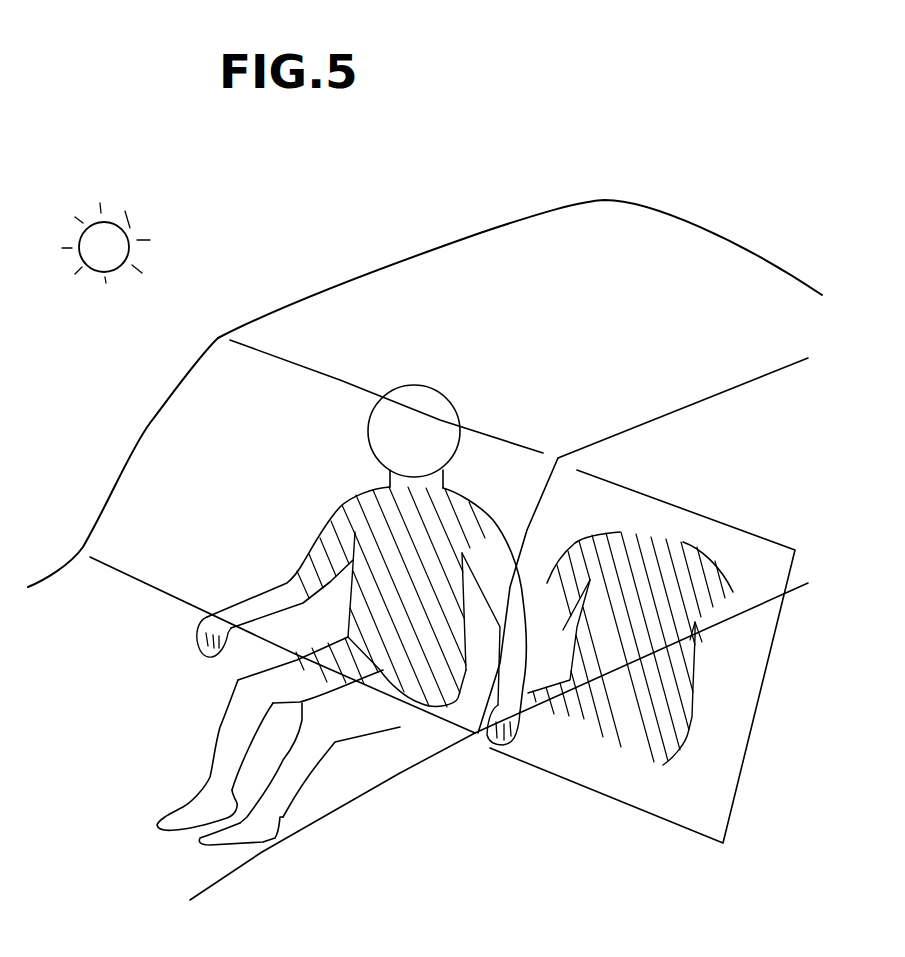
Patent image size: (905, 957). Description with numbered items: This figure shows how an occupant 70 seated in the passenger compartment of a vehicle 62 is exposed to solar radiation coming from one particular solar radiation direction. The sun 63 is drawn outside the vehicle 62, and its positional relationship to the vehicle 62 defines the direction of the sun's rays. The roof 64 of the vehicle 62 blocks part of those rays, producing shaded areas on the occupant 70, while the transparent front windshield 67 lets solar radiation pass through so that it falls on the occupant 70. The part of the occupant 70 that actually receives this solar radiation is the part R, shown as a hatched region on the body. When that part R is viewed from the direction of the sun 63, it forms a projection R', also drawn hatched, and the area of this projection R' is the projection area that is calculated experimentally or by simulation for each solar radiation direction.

The vehicle 62 is at (425, 511).
The sun 63 is at (113, 226).
The roof 64 is at (316, 304).
The front windshield 67 is at (163, 432).
The occupant 70 is at (341, 654).
The part where the occupant receives solar radiation R is at (362, 634).
The projection of the part exposed to solar radiation R' is at (630, 720).